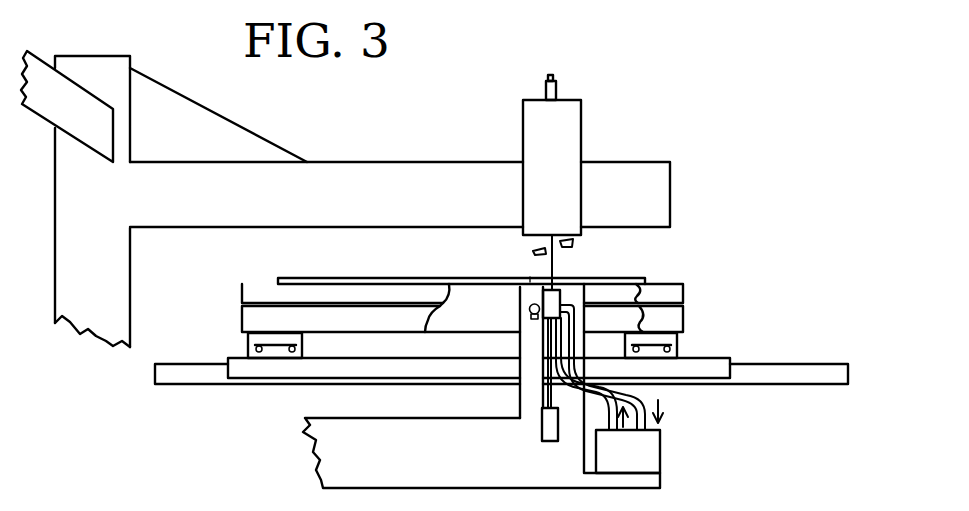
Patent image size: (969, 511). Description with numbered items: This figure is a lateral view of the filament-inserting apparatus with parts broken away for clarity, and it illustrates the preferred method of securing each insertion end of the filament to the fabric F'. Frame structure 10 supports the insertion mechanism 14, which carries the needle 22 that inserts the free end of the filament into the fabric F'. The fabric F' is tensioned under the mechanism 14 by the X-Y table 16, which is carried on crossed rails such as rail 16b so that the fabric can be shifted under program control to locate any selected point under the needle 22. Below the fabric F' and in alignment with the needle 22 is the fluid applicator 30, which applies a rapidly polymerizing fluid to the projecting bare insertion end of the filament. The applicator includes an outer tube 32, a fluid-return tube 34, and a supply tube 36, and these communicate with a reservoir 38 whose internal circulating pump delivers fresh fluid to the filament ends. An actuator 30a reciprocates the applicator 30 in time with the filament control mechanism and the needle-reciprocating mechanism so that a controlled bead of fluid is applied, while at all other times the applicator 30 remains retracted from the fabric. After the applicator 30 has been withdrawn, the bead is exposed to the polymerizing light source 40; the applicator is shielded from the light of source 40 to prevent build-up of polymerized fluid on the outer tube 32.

The frame structure 10 is at (405, 152).
The mechanism 14 is at (559, 134).
The X-Y table 16 is at (685, 313).
The crossed rail 16b is at (248, 340).
The needle 22 is at (575, 246).
The fluid applicator 30 is at (590, 317).
The actuator 30a is at (541, 425).
The outer tube 32 is at (581, 318).
The fluid-return tube 34 is at (640, 392).
The supply tube 36 is at (603, 413).
The reservoir 38 is at (645, 450).
The polymerizing light source 40 is at (528, 312).
The fabric F' is at (506, 260).